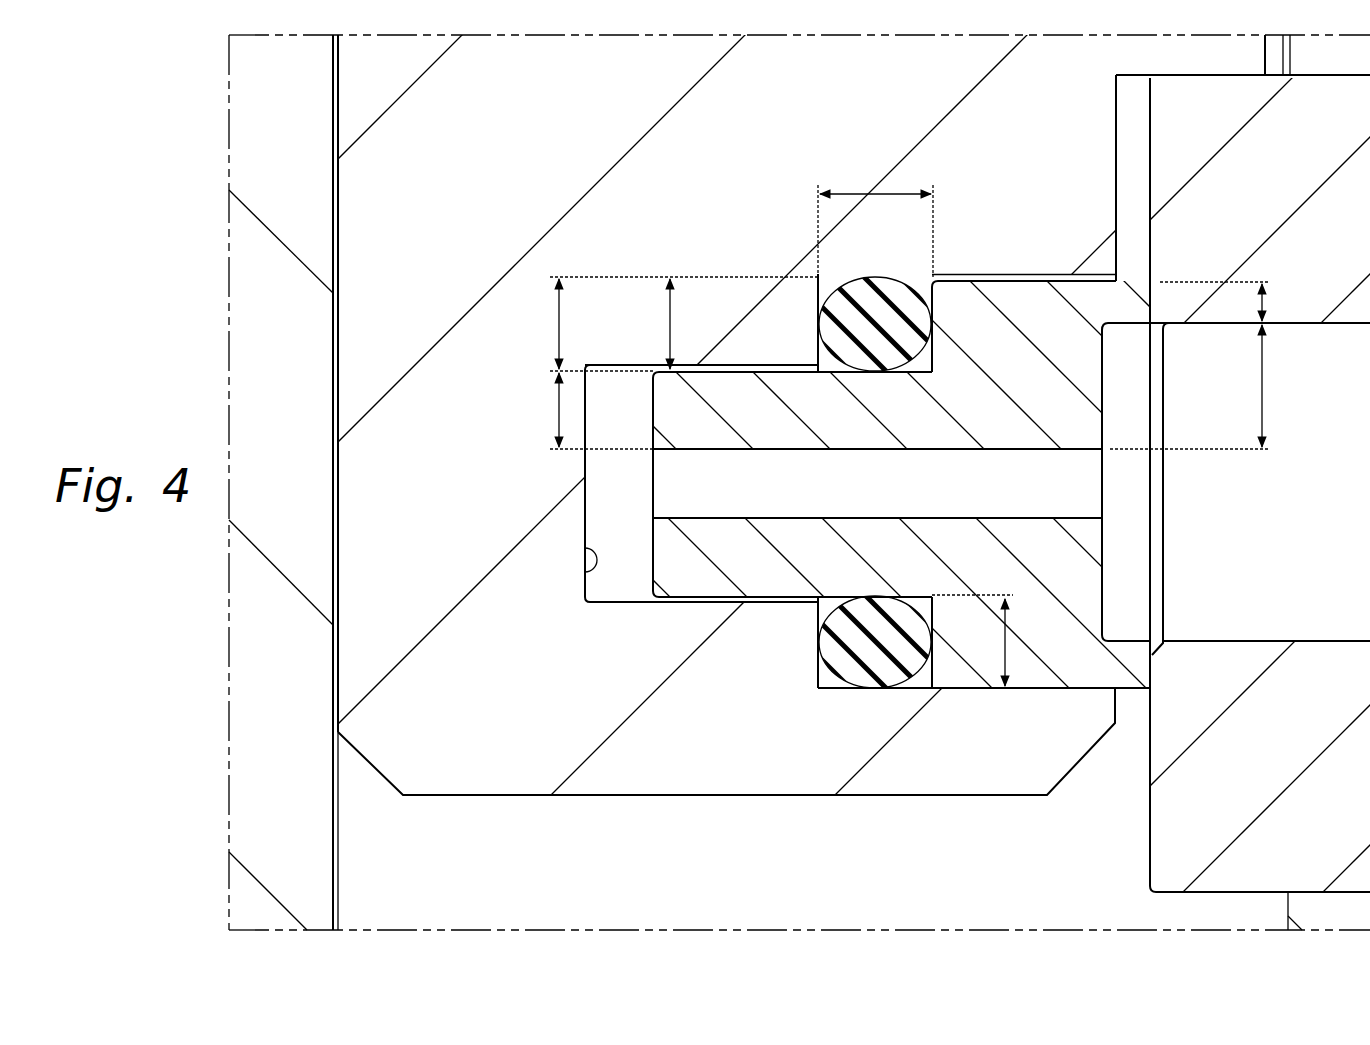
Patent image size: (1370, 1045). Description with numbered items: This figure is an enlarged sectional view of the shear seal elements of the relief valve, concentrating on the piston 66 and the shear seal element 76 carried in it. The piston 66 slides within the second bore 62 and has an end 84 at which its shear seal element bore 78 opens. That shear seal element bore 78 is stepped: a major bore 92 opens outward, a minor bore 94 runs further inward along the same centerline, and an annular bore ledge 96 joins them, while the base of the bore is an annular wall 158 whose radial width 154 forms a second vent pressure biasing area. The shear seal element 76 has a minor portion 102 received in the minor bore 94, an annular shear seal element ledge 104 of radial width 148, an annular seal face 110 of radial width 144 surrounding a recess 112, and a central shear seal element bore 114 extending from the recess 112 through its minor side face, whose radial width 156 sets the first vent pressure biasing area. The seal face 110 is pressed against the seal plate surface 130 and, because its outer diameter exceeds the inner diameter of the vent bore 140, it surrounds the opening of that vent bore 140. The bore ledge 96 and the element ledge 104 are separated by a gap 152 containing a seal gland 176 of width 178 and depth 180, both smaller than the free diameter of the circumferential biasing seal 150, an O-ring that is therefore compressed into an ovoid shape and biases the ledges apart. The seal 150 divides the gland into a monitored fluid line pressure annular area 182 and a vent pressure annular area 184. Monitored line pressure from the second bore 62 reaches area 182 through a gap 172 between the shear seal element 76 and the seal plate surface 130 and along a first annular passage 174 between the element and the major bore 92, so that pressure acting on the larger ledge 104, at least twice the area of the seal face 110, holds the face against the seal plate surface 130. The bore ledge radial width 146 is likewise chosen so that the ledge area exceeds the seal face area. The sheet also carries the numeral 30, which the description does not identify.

The valve body 30 is at (713, 885).
The second bore 62 is at (338, 864).
The piston 66 is at (630, 770).
The shear seal element 76 is at (843, 623).
The shear seal element bore 78 is at (622, 585).
The end of the piston 84 is at (497, 795).
The major bore 92 is at (1028, 281).
The minor bore 94 is at (740, 372).
The annular bore ledge 96 is at (866, 693).
The minor portion 102 is at (668, 405).
The annular shear seal element ledge 104 is at (892, 598).
The annular seal face 110 is at (1150, 668).
The recess 112 is at (1130, 492).
The central shear seal element bore 114 is at (668, 486).
The seal plate surface 130 is at (1150, 855).
The vent bore 140 is at (1300, 497).
The radial width of the annular seal face 144 is at (1268, 300).
The bore ledge radial width 146 is at (668, 320).
The radial width of the annular shear seal element ledge 148 is at (1010, 640).
The circumferential biasing seal 150 is at (832, 338).
The gap 152 is at (822, 692).
The radial width of the annular wall 154 is at (1268, 383).
The radial width of the minor side face 156 is at (557, 405).
The annular wall 158 is at (588, 565).
The gap 172 is at (1128, 712).
The first annular passage 174 is at (997, 273).
The seal gland 176 is at (818, 296).
The width of the seal gland 178 is at (868, 193).
The depth of the seal gland 180 is at (557, 320).
The monitored fluid line pressure annular area 182 is at (873, 277).
The vent pressure annular area 184 is at (830, 372).